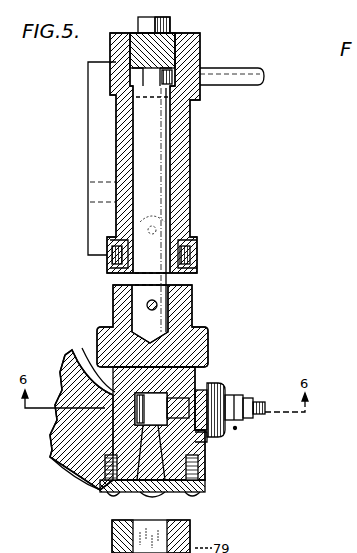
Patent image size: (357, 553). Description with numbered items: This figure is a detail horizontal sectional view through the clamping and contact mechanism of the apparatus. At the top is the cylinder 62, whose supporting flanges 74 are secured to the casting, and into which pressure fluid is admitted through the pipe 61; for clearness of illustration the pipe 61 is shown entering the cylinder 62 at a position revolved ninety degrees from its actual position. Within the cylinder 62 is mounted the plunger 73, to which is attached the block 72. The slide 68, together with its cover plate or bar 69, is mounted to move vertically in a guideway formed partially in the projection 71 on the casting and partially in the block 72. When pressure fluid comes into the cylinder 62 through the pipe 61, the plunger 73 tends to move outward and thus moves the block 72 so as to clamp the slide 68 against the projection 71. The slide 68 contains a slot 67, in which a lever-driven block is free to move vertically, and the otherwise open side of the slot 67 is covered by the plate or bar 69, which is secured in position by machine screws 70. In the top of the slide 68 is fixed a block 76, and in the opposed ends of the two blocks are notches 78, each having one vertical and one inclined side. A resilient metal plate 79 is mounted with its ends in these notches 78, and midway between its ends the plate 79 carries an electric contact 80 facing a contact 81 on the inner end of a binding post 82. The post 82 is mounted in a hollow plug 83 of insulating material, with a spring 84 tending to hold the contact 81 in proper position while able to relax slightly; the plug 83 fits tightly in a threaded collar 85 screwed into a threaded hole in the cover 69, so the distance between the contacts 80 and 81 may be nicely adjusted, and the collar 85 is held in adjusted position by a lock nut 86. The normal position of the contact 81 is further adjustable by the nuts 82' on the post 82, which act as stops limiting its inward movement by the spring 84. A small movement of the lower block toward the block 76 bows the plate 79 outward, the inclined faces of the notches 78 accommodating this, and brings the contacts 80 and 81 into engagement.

The pipe 61 is at (231, 86).
The cylinder 62 is at (190, 163).
The plunger 73 is at (157, 200).
The supporting flanges 74 is at (94, 172).
The block 72 is at (208, 336).
The projection 71 is at (205, 481).
The machine screws 70 is at (195, 376).
The plate or bar 69 is at (200, 442).
The slot 67 is at (82, 348).
The slide 68 is at (72, 470).
The resilient metal plate 79 is at (75, 440).
The block 76 is at (190, 525).
The notches 78 is at (144, 399).
The electric contact 80 is at (136, 496).
The contact 81 is at (195, 500).
The binding post 82 is at (272, 405).
The nuts 82' is at (270, 393).
The hollow plug 83 is at (237, 428).
The spring 84 is at (178, 408).
The threaded collar 85 is at (232, 392).
The lock nut 86 is at (222, 386).